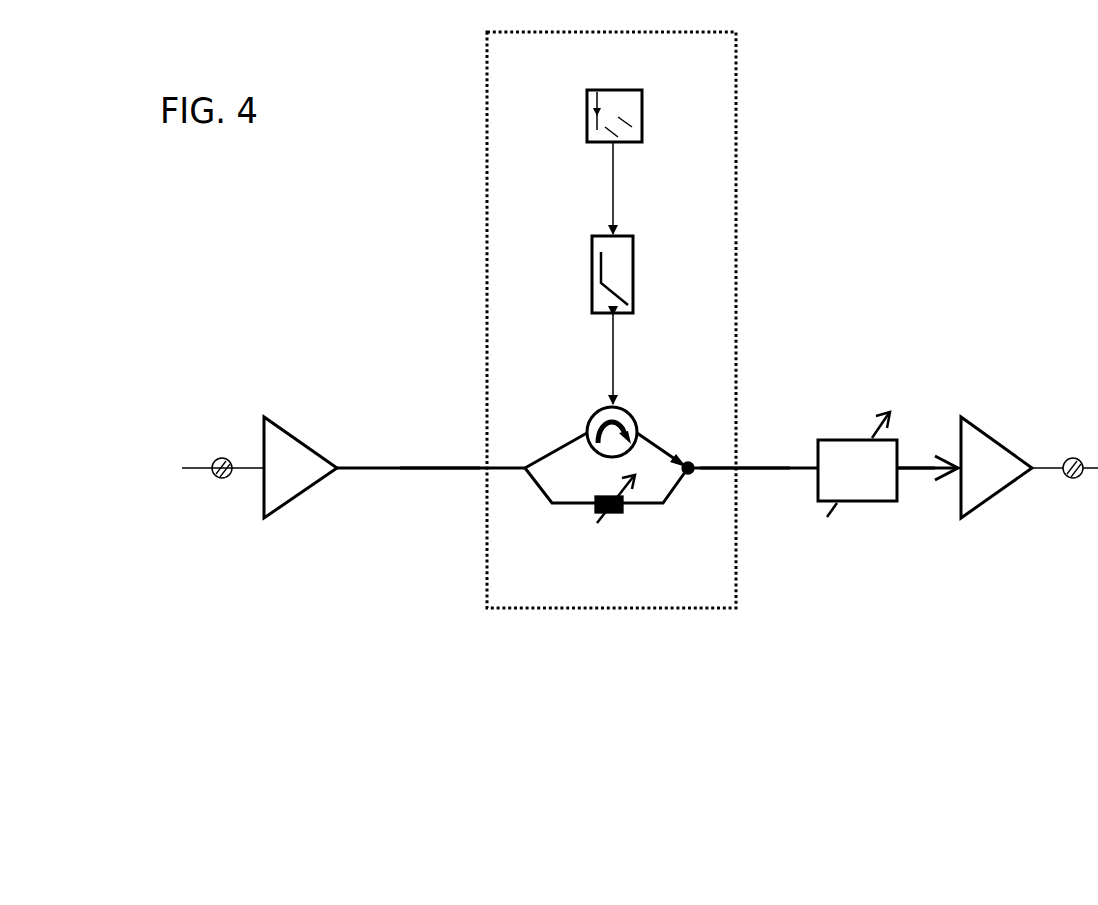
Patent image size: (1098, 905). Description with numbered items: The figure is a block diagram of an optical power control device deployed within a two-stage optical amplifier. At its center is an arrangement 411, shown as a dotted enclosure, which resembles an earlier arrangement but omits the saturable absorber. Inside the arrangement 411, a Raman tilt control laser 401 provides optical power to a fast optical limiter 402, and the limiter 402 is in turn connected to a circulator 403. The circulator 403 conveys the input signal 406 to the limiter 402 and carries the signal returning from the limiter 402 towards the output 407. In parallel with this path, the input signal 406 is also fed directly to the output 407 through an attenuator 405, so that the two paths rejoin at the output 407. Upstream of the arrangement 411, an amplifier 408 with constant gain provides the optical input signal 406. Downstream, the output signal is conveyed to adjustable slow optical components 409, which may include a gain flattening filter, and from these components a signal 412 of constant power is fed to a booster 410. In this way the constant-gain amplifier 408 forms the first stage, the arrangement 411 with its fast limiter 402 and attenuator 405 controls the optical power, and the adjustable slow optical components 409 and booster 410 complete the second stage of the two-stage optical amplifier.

The Raman tilt control laser 401 is at (591, 102).
The fast optical limiter 402 is at (593, 245).
The circulator 403 is at (602, 411).
The attenuator 405 is at (611, 519).
The input signal 406 is at (438, 467).
The output 407 is at (745, 468).
The amplifier 408 is at (292, 498).
The adjustable slow optical components (ASOC) 409 is at (885, 503).
The booster 410 is at (973, 502).
The arrangement 411 is at (820, 74).
The signal of constant power 412 is at (912, 468).